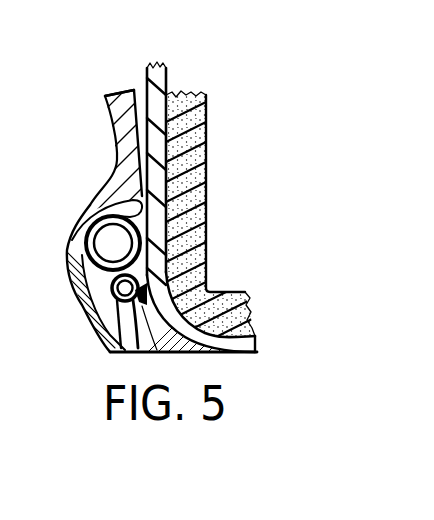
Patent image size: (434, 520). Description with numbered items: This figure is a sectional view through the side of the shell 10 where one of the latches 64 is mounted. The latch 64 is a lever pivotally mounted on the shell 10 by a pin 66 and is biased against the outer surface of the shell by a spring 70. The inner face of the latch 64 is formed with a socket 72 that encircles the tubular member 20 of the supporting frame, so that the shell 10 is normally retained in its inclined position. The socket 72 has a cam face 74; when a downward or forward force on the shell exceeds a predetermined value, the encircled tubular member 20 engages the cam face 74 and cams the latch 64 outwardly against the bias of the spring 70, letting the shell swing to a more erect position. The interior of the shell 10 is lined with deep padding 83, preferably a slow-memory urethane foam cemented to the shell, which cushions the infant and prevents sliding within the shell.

The shell 10 is at (147, 83).
The tubular member 20 is at (87, 268).
The latch 64 is at (104, 97).
The pin 66 is at (126, 300).
The spring 70 is at (131, 315).
The socket 72 is at (116, 153).
The cam face 74 is at (112, 207).
The padding 83 is at (181, 97).